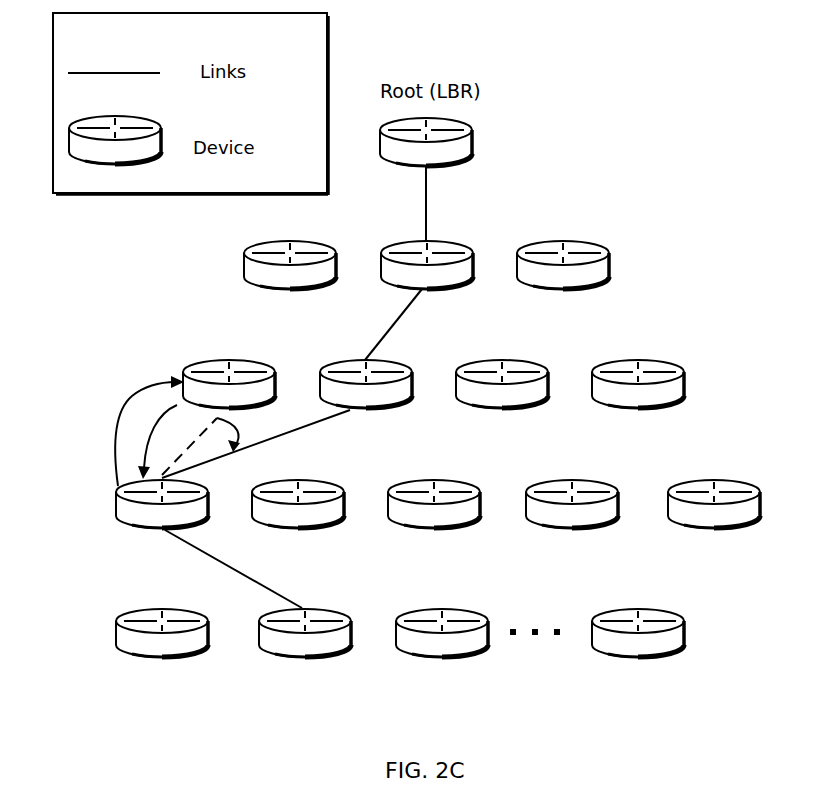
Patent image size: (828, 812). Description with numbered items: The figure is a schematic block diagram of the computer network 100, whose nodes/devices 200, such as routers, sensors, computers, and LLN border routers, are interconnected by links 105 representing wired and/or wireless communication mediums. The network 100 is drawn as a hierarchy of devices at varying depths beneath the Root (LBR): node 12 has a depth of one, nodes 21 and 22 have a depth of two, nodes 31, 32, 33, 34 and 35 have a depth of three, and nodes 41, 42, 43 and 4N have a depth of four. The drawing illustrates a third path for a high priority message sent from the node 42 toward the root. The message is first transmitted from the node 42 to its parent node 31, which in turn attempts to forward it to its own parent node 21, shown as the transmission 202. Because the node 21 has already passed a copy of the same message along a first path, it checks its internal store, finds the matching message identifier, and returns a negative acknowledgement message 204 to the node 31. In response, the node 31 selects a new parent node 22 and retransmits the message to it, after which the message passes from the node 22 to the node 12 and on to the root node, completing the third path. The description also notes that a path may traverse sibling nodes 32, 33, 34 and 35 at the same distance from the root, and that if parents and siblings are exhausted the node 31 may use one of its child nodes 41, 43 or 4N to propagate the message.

The computer network 100 is at (628, 179).
The link 105 is at (310, 81).
The node/device 200 is at (310, 157).
The node 12 is at (440, 315).
The node 21 is at (174, 370).
The node 22 is at (364, 435).
The node 31 is at (174, 556).
The node 32 is at (310, 556).
The node 33 is at (447, 556).
The node 34 is at (583, 556).
The node 35 is at (724, 556).
The node 41 is at (168, 685).
The node 42 is at (311, 685).
The node 43 is at (451, 685).
The node 4N is at (652, 685).
The transmission 202 is at (137, 393).
The negative acknowledgement message 204 is at (147, 437).